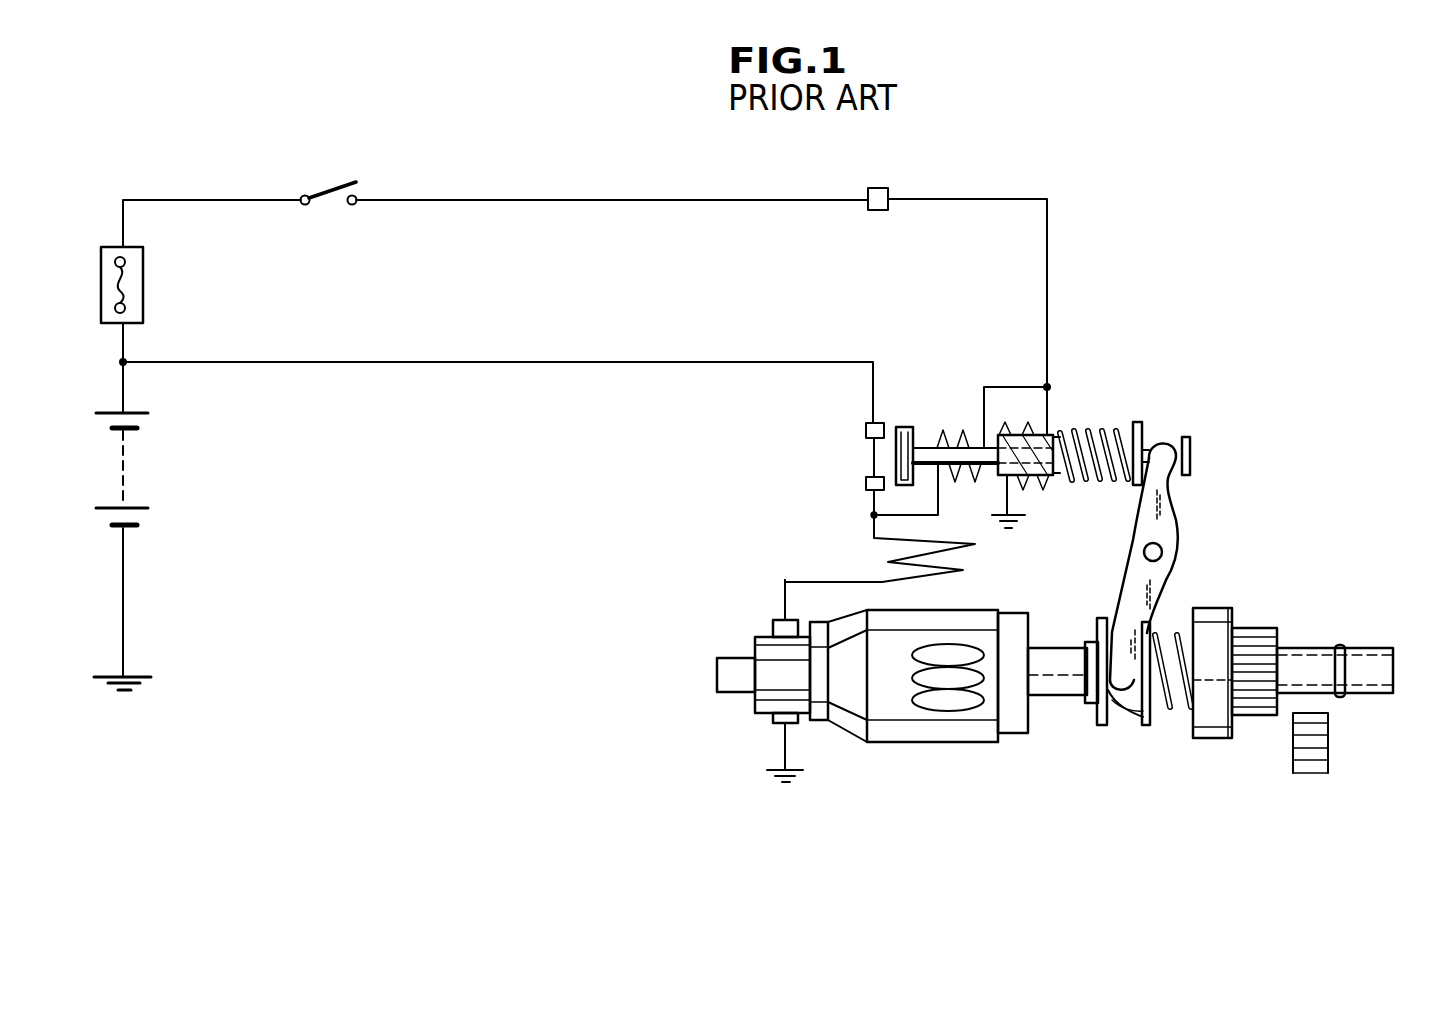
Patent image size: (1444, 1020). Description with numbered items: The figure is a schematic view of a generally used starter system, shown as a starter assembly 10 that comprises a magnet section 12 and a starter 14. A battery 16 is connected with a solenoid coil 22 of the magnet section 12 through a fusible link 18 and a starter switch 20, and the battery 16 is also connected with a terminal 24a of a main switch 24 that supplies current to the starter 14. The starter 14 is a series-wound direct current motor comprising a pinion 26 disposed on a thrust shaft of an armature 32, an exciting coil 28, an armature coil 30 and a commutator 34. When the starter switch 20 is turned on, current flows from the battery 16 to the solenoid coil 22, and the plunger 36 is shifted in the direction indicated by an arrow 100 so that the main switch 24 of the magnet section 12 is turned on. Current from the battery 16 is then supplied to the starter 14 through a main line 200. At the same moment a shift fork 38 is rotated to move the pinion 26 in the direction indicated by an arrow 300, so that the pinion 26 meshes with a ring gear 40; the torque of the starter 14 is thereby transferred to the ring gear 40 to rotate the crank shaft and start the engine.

The starter assembly 10 is at (1233, 397).
The magnet section 12 is at (1250, 520).
The starter 14 is at (1348, 703).
The battery 16 is at (123, 466).
The fusible link 18 is at (143, 285).
The starter switch 20 is at (363, 185).
The solenoid coil 22 is at (963, 412).
The main switch 24 is at (866, 456).
The terminal 24a is at (865, 428).
The pinion 26 is at (1255, 637).
The exciting coil 28 is at (888, 562).
The armature coil 30 is at (913, 718).
The armature 32 is at (975, 735).
The commutator 34 is at (755, 708).
The plunger 36 is at (1191, 441).
The shift fork 38 is at (1176, 538).
The ring gear 40 is at (1292, 757).
The arrow 100 is at (1073, 407).
The main line 200 is at (685, 361).
The arrow 300 is at (1418, 635).